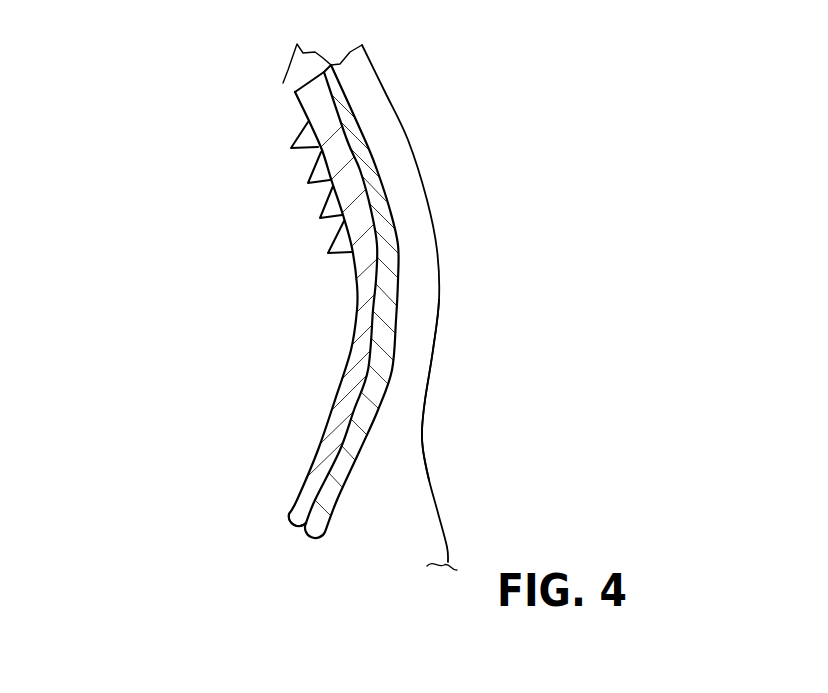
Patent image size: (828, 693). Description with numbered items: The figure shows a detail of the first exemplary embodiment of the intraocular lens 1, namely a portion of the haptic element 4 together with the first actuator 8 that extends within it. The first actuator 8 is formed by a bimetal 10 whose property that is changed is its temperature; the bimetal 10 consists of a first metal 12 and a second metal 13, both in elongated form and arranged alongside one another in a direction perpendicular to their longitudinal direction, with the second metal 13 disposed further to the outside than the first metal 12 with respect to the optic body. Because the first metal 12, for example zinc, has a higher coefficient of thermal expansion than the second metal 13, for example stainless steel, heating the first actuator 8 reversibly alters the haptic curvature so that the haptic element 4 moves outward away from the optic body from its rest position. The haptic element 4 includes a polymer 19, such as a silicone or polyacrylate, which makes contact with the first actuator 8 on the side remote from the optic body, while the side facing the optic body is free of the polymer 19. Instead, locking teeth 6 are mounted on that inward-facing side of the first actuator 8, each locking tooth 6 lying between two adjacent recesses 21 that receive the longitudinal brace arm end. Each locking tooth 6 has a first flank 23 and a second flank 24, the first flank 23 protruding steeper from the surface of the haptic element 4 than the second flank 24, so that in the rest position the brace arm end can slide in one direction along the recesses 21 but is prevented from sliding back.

The intraocular lens 1 is at (164, 258).
The haptic element 4 is at (432, 307).
The locking tooth 6 is at (297, 140).
The first actuator 8 is at (298, 538).
The bimetal of the first actuator 10 is at (343, 312).
The first metal 12 is at (367, 292).
The second metal 13 is at (358, 143).
The polymer 19 is at (407, 432).
The recess 21 is at (332, 224).
The first flank 23 is at (329, 192).
The second flank 24 is at (313, 168).